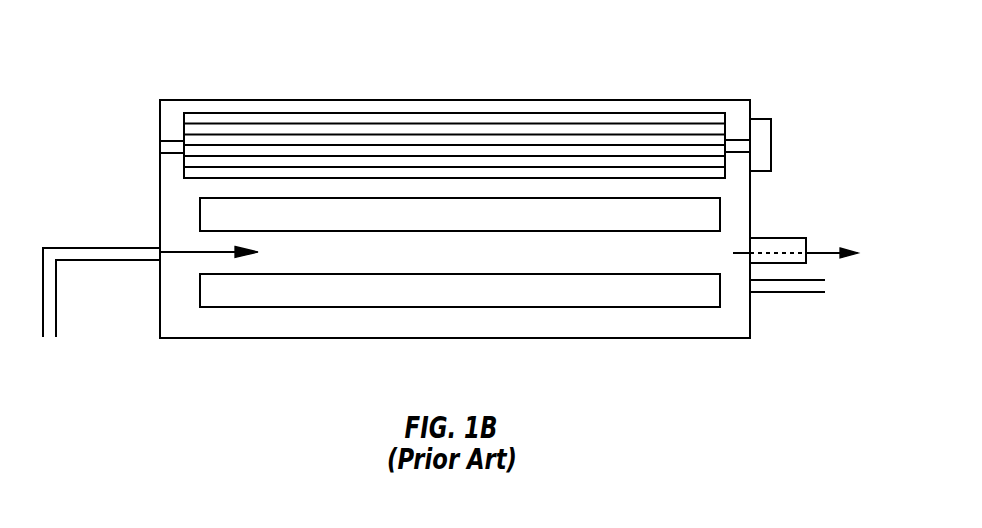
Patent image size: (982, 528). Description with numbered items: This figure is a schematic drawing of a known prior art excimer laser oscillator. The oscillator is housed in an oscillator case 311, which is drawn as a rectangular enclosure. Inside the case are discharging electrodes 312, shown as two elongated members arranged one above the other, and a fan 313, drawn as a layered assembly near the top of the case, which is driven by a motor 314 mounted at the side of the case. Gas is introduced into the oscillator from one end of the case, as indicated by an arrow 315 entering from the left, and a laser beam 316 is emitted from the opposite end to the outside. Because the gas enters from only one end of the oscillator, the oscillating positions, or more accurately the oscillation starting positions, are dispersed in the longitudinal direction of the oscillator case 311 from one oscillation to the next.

The oscillator case 311 is at (455, 200).
The discharging electrodes 312 is at (712, 226).
The fan 313 is at (455, 120).
The motor 314 is at (792, 127).
The arrow indicating gas introduction 315 is at (150, 289).
The laser beam 316 is at (808, 271).